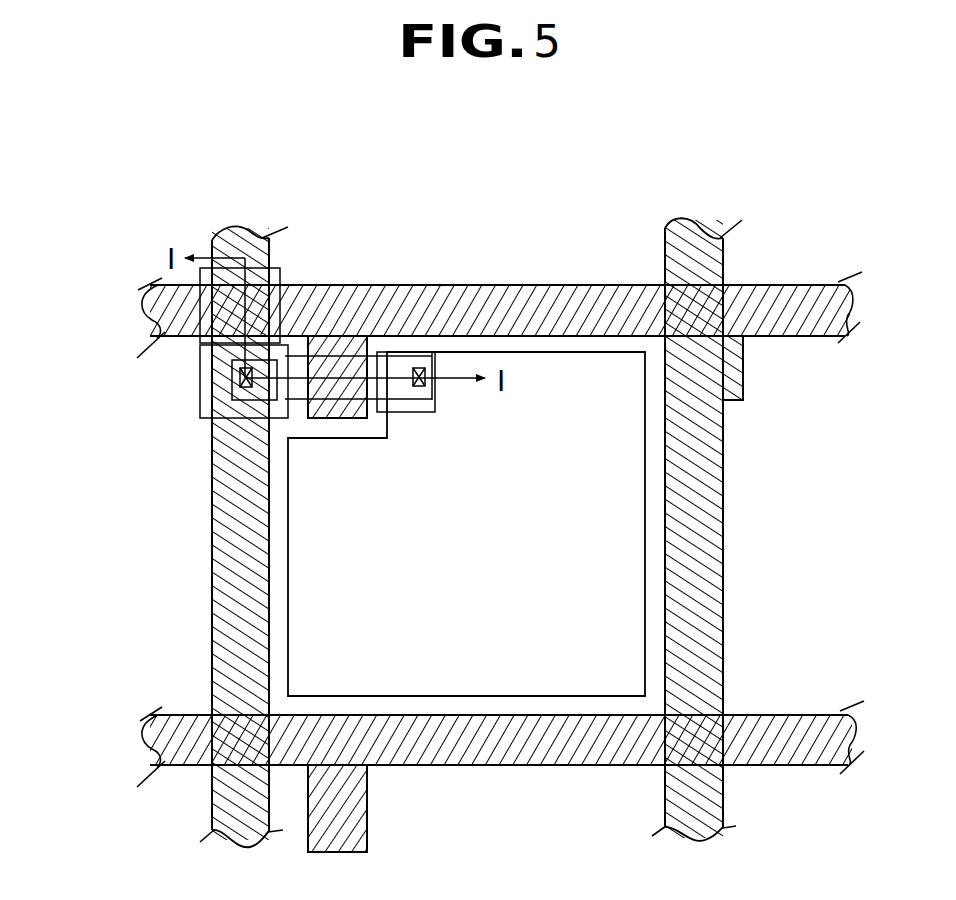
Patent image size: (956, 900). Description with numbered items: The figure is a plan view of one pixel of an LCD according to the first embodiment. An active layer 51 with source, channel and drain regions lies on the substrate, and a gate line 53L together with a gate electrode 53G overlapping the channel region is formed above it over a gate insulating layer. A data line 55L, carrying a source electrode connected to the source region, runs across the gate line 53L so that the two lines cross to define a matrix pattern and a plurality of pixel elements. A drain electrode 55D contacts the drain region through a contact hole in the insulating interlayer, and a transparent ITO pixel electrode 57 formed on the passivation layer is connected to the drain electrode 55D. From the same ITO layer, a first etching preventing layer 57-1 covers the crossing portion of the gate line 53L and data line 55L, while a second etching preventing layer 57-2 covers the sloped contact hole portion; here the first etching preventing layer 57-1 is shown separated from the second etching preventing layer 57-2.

The active layer 51 is at (437, 390).
The gate line 53L is at (155, 318).
The gate electrode 53G is at (350, 418).
The data line 55L is at (524, 532).
The drain electrode 55D is at (405, 413).
The pixel electrode 57 is at (647, 597).
The first etching preventing layer 57-1 is at (200, 283).
The second etching preventing layer 57-2 is at (200, 392).